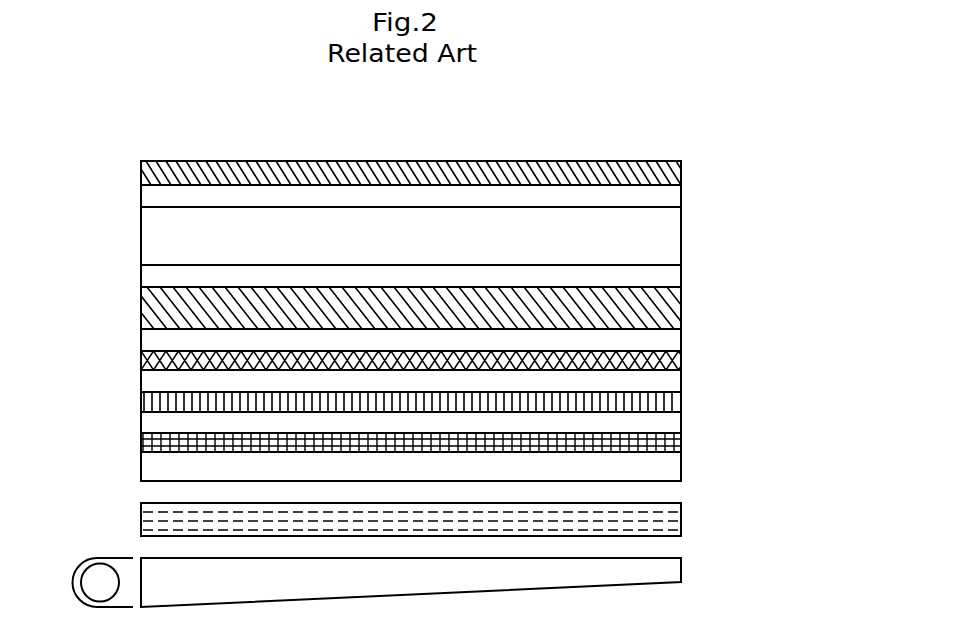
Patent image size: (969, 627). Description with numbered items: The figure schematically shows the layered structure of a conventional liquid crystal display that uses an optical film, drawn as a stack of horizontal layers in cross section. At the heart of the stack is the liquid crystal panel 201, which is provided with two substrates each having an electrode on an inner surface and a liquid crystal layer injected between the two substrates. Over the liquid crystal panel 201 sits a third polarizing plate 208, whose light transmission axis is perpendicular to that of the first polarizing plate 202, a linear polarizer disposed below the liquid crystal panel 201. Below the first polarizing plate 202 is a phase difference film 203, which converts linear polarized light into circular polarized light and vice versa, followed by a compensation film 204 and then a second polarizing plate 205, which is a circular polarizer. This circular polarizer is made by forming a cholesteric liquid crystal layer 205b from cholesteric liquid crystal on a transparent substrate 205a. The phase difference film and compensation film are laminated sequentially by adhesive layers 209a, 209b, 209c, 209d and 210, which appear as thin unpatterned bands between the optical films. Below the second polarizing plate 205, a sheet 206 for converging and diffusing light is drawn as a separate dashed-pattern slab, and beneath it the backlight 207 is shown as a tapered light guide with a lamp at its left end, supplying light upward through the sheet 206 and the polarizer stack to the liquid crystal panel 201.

The liquid crystal panel 201 is at (675, 236).
The first polarizing plate 202 is at (675, 306).
The phase difference film 203 is at (675, 360).
The compensation film 204 is at (675, 403).
The second polarizing plate 205 is at (492, 456).
The transparent substrate 205a is at (675, 472).
The cholesteric liquid crystal layer 205b is at (675, 440).
The sheet 206 is at (675, 517).
The backlight 207 is at (675, 568).
The third polarizing plate 208 is at (675, 173).
The adhesive layer 209a is at (145, 276).
The adhesive layer 209b is at (145, 341).
The adhesive layer 209c is at (145, 383).
The adhesive layer 209d is at (145, 420).
The adhesive layer 210 is at (675, 198).